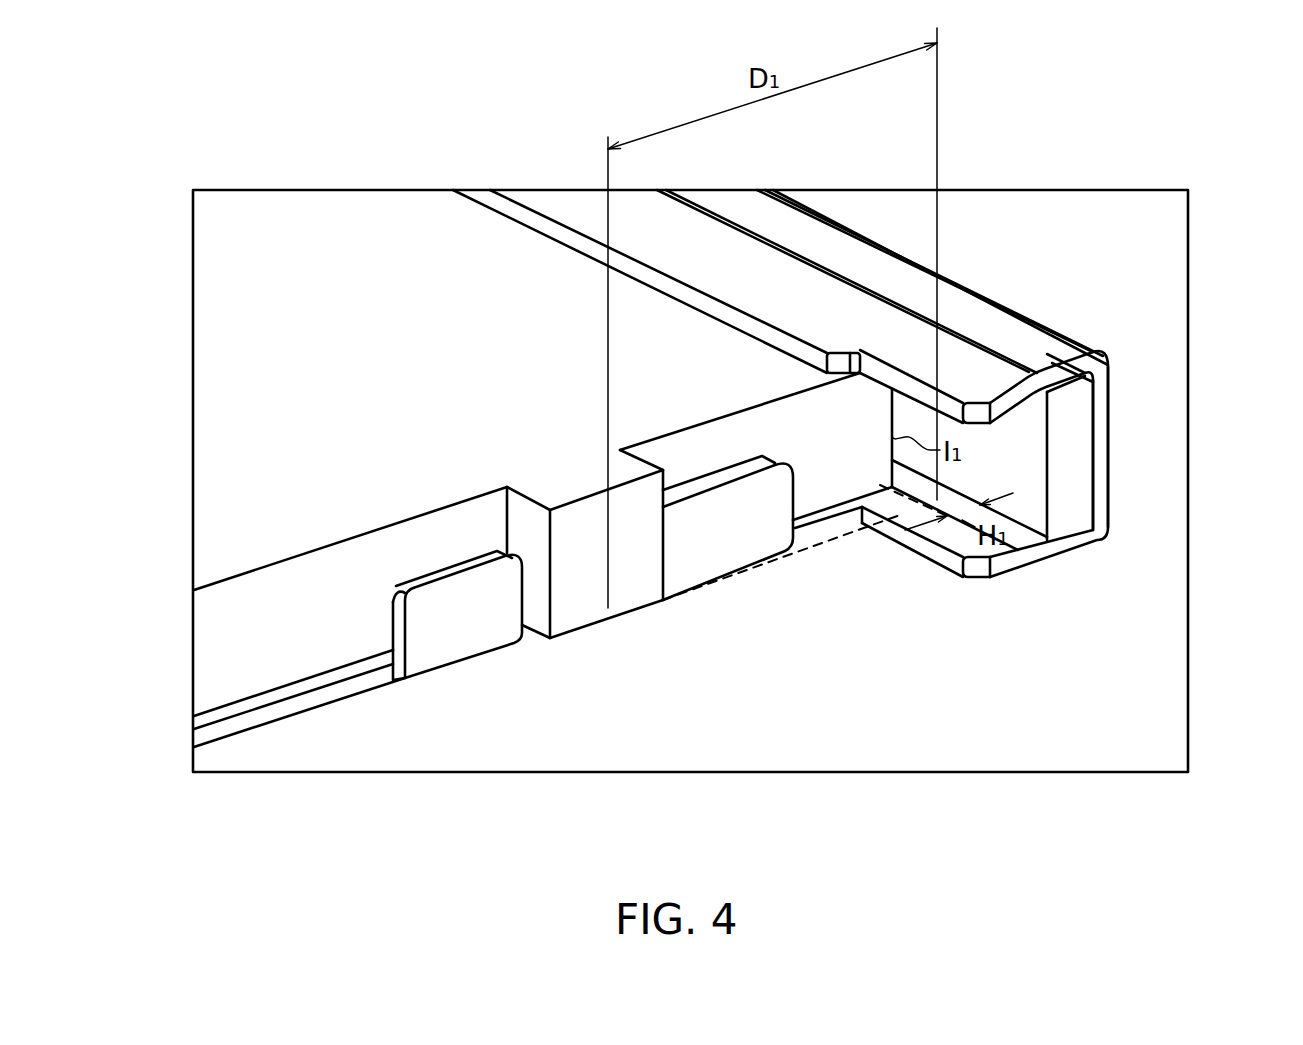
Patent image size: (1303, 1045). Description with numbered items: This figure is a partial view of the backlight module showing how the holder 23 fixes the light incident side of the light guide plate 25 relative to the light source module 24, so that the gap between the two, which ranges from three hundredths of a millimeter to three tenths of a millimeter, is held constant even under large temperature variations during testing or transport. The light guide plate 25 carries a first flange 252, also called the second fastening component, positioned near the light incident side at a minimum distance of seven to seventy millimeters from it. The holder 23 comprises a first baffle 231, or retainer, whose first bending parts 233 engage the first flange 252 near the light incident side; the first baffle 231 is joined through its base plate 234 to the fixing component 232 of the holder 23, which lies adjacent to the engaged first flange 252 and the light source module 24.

The holder 23 is at (1078, 302).
The first baffle 231 is at (593, 727).
The fixing component 232 is at (1100, 488).
The first bending parts 233 is at (487, 625).
The base plate 234 is at (817, 530).
The light source module 24 is at (1067, 510).
The light guide plate 25 is at (263, 452).
The first flange 252 is at (592, 530).